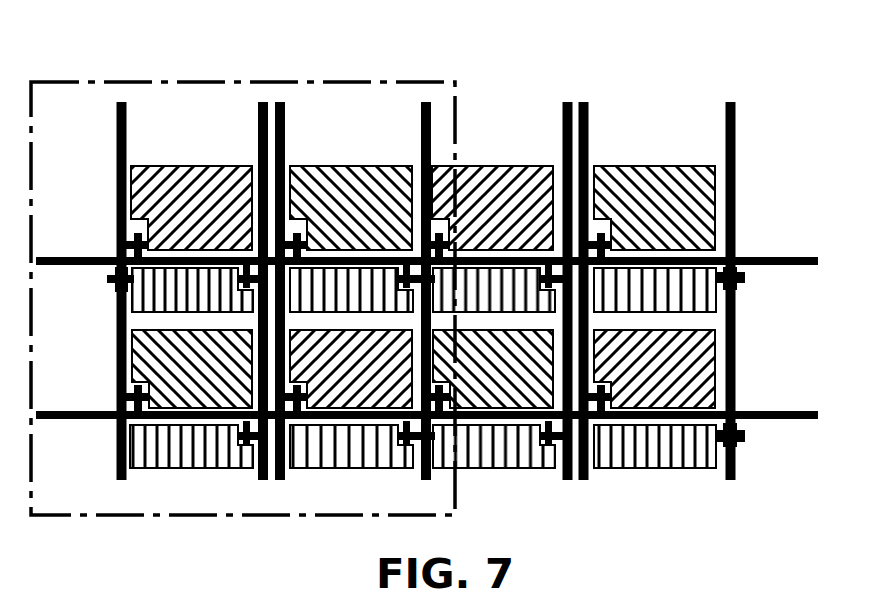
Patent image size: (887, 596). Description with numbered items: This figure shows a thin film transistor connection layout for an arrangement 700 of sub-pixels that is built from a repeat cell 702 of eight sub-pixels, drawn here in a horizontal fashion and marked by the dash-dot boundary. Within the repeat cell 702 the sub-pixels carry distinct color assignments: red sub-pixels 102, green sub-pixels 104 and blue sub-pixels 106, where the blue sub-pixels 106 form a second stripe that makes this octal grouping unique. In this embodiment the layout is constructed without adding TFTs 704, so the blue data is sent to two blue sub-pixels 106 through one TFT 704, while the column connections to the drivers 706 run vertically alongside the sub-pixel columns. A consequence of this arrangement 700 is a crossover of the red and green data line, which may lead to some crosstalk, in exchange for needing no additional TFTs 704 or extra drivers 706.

The arrangement of sub-pixels 700 is at (692, 66).
The repeat cell 702 is at (452, 95).
The TFT 704 is at (143, 243).
The driver 706 is at (787, 203).
The red sub-pixel 102 is at (190, 187).
The green sub-pixel 104 is at (131, 377).
The blue sub-pixel 106 is at (138, 300).